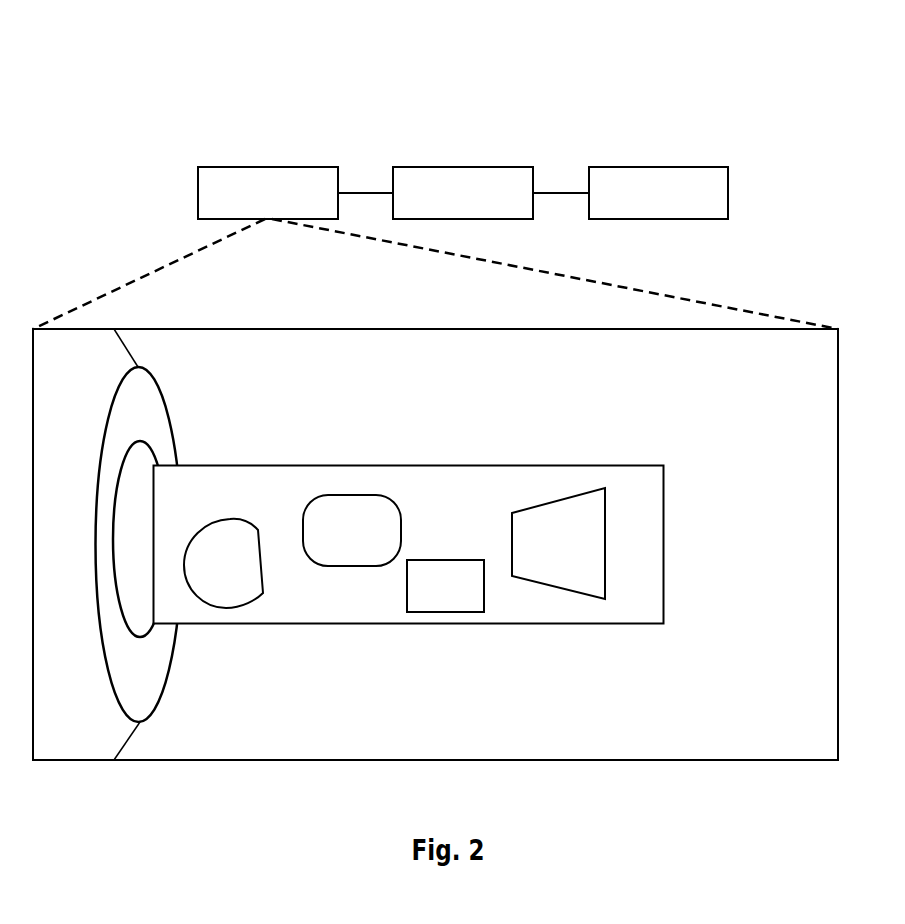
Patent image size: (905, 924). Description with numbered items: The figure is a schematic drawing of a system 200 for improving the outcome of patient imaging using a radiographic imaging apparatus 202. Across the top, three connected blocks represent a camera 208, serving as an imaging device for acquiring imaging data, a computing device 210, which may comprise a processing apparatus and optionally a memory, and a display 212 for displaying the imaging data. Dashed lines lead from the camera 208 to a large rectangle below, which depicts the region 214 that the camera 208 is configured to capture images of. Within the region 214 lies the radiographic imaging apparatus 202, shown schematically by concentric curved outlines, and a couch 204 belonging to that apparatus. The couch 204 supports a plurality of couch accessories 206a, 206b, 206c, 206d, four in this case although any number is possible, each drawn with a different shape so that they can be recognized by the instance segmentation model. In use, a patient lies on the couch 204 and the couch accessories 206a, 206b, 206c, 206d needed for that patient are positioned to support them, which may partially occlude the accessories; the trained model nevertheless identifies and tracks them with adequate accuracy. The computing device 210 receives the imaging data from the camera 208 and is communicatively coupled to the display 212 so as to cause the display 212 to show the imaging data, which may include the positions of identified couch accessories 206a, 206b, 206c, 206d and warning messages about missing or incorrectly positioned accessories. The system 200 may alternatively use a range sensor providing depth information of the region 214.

The system 200 is at (191, 137).
The radiographic imaging apparatus 202 is at (164, 397).
The couch 204 is at (629, 465).
The couch accessory 206a is at (326, 543).
The couch accessory 206b is at (197, 576).
The couch accessory 206c is at (418, 600).
The couch accessory 206d is at (532, 554).
The camera 208 is at (248, 206).
The computing device 210 is at (444, 206).
The display 212 is at (638, 206).
The region 214 is at (782, 329).